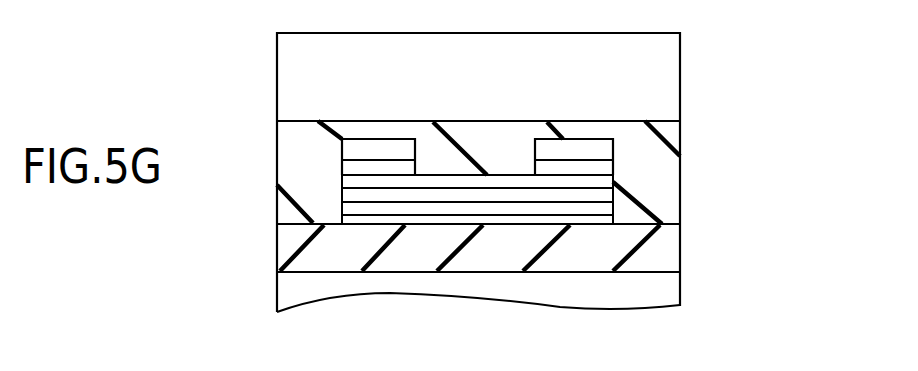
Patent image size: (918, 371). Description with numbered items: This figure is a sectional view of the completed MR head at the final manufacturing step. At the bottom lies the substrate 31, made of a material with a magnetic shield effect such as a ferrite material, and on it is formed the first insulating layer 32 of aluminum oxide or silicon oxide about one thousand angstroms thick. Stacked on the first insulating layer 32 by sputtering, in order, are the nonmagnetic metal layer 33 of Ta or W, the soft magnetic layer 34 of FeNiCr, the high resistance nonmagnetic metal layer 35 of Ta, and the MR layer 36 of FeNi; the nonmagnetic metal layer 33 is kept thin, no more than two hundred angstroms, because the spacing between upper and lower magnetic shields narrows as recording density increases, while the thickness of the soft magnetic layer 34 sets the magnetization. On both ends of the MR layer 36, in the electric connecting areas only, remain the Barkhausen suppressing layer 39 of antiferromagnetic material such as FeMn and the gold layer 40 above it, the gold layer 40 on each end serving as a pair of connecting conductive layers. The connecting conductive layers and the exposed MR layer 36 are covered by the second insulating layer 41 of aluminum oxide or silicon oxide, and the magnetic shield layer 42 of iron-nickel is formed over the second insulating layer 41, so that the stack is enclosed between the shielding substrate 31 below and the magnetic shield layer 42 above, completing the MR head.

The substrate 31 is at (668, 292).
The first insulating layer 32 is at (665, 257).
The nonmagnetic metal layer 33 is at (373, 222).
The soft magnetic layer 34 is at (607, 209).
The high resistance nonmagnetic metal layer 35 is at (607, 198).
The MR layer 36 is at (350, 186).
The Barkhausen suppressing layer 39 is at (350, 170).
The gold layer 40 is at (363, 150).
The second insulating layer 41 is at (673, 157).
The magnetic shield layer 42 is at (672, 82).